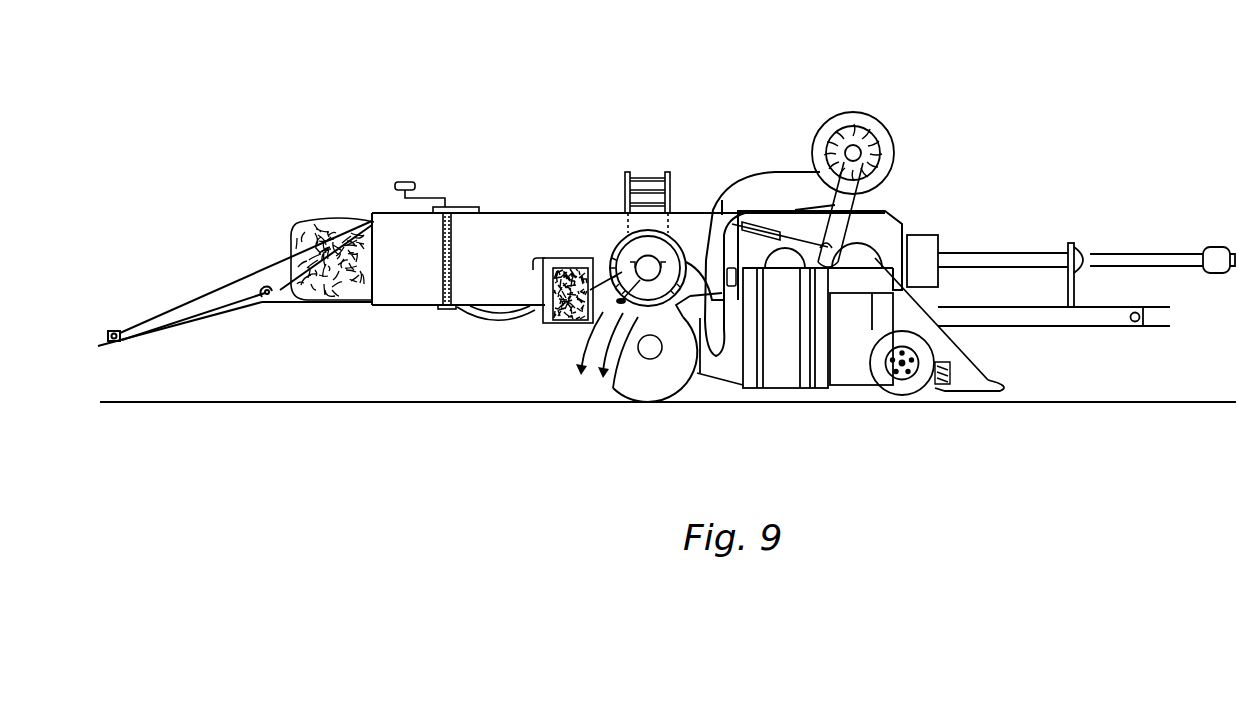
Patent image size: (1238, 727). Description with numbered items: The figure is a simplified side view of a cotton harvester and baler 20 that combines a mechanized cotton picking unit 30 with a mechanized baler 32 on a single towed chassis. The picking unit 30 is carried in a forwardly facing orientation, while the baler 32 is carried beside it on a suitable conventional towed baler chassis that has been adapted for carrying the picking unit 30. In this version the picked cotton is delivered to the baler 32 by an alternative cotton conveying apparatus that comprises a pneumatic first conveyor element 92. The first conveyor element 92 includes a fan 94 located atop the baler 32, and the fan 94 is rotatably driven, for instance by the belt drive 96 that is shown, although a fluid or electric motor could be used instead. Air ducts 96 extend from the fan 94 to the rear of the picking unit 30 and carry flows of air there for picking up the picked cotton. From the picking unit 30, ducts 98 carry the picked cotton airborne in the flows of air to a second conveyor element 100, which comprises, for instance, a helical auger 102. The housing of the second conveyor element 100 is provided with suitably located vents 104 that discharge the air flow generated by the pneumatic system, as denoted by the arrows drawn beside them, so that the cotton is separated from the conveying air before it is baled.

The cotton harvester and baler 20 is at (1116, 129).
The mechanized cotton picking unit 30 is at (925, 233).
The mechanized baler 32 is at (687, 206).
The first conveyor element 92 is at (676, 305).
The fan 94 is at (886, 125).
The air ducts 96 is at (755, 175).
The ducts 98 is at (683, 306).
The second conveyor element 100 is at (618, 238).
The helical auger 102 is at (609, 258).
The vents 104 is at (565, 323).